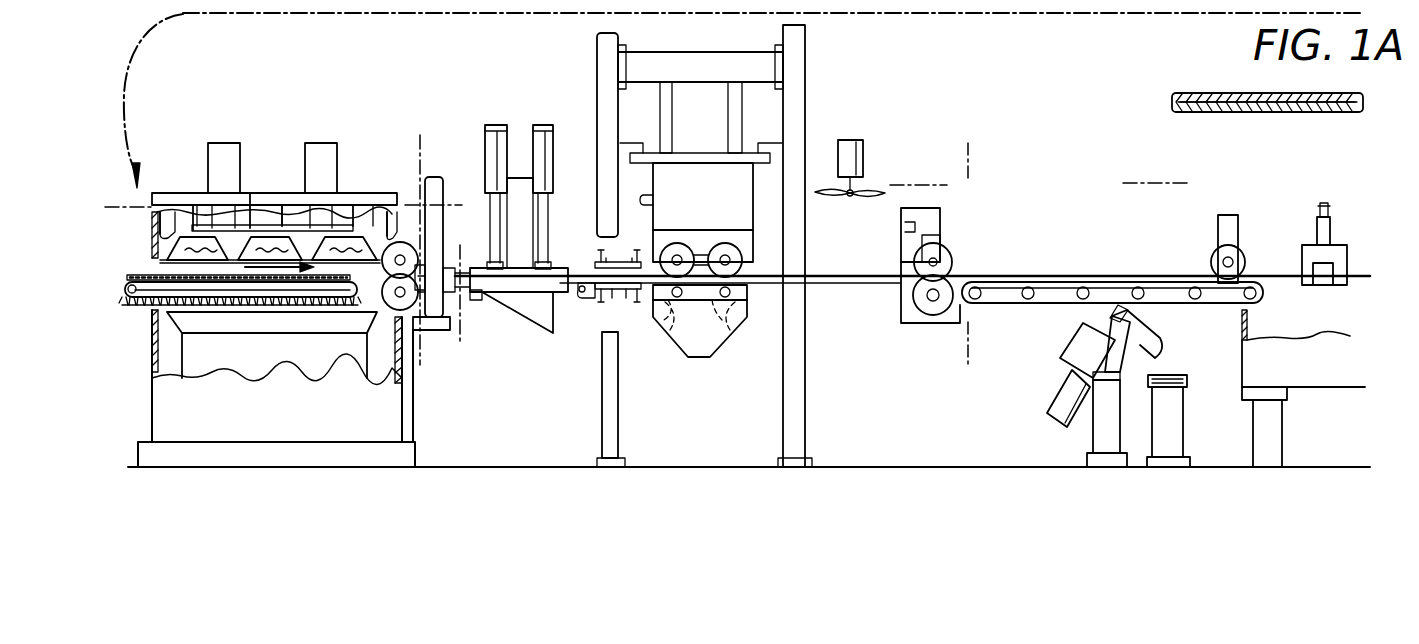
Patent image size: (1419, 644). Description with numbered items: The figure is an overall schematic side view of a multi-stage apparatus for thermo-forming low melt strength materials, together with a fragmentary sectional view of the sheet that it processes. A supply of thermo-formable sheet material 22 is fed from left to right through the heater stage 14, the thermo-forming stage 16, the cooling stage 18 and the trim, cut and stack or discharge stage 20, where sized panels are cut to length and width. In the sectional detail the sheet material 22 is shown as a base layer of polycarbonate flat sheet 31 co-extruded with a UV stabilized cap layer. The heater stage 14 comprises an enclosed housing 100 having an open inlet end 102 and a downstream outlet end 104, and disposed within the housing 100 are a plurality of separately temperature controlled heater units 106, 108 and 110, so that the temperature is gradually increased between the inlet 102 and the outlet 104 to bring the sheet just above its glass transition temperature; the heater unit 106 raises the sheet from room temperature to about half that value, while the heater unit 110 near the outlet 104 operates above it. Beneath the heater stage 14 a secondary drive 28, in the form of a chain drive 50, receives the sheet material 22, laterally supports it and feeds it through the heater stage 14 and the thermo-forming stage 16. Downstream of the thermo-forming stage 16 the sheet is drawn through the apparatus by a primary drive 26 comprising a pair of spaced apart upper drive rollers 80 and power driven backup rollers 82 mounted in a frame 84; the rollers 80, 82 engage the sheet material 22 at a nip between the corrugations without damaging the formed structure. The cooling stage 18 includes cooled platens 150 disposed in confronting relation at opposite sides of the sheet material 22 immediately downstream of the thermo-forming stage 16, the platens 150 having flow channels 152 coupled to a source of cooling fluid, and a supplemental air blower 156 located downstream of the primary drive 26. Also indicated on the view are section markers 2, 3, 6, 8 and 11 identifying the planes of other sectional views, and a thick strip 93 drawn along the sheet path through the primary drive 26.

The heater stage 14 is at (274, 155).
The enclosed housing 100 is at (252, 192).
The inlet end 102 is at (177, 211).
The outlet end 104 is at (385, 215).
The heater unit 106 is at (195, 208).
The heater unit 108 is at (282, 202).
The heater unit 110 is at (353, 212).
The secondary drive 28 is at (293, 333).
The chain drive 50 is at (198, 319).
The thermo-forming stage 16 is at (478, 134).
The cooling stage 18 is at (686, 246).
The primary drive 26 is at (703, 196).
The frame 84 is at (664, 210).
The upper drive rollers 80 is at (719, 246).
The backup rollers 82 is at (712, 312).
The strip 93 is at (660, 308).
The flow channels 152 is at (581, 251).
The platens 150 is at (584, 307).
The supplemental air blower 156 is at (854, 140).
The discharge stage 20 is at (1112, 208).
The thermo-formable sheet material 22 is at (1159, 90).
The polycarbonate flat sheet 31 is at (1250, 113).
The section line 2- 2 is at (400, 135).
The section line 3- 3 is at (432, 245).
The section line 6- 6 is at (890, 185).
The section line 8- 8 is at (950, 143).
The section line 11- 11 is at (463, 215).